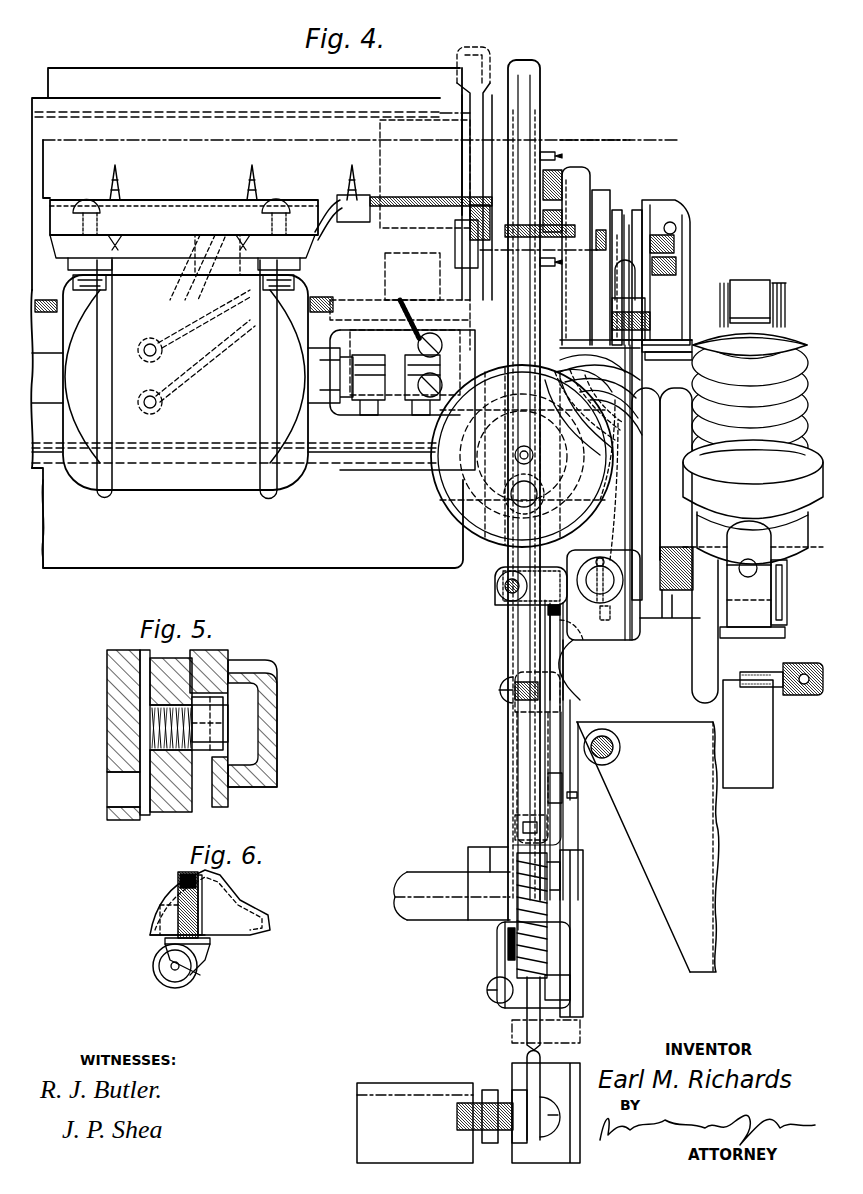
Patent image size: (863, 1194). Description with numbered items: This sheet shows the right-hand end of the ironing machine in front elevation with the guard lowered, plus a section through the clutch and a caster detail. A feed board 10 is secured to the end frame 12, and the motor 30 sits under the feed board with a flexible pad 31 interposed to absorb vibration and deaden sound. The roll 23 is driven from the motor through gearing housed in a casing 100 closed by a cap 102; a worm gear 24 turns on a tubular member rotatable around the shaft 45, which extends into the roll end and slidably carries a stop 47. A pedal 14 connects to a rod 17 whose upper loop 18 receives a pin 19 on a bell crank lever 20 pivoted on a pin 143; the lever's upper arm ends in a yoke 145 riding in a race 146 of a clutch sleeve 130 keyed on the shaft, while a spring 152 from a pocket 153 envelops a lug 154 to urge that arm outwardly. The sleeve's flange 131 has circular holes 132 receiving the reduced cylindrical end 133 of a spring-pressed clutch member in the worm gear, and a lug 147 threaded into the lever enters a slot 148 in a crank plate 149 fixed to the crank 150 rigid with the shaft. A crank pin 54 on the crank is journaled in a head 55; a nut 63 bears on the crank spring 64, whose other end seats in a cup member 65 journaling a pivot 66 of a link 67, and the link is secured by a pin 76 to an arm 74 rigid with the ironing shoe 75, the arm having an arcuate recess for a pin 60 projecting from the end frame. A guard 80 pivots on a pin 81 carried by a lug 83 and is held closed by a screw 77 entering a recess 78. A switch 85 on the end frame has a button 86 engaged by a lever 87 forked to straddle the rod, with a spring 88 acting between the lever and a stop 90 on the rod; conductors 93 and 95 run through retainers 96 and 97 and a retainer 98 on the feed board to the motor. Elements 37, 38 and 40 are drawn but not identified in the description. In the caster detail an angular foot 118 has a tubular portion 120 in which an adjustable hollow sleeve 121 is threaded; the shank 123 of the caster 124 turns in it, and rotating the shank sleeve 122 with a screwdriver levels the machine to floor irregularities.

In FIG. 4, the feed board 10 is at (107, 150).
In FIG. 4, the ironing shoe 75 is at (222, 80).
In FIG. 4, the roll 23 is at (346, 462).
In FIG. 4, the flexible pad 31 is at (163, 235).
In FIG. 4, the motor 30 is at (192, 379).
In FIG. 4, the electrical conductor 95 is at (168, 346).
In FIG. 4, the shaft 45 is at (342, 268).
In FIG. 4, the retainer 98 is at (360, 195).
In FIG. 4, the retainer 97 is at (470, 238).
In FIG. 4, the cap 102 is at (463, 278).
In FIG. 4, the recess 78 is at (470, 62).
In FIG. 4, the worm gear 24 is at (525, 72).
In FIG. 4, the pin 38 is at (540, 175).
In FIG. 4, the bushing 37 is at (565, 195).
In FIG. 4, the slide bar 40 is at (568, 212).
In FIG. 4, the stop 47 is at (602, 204).
In FIG. 4, the flange 131 is at (618, 232).
In FIG. 5, the flange 131 is at (120, 655).
In FIG. 4, the race 146 is at (627, 242).
In FIG. 4, the clutch sleeve 130 is at (637, 262).
In FIG. 4, the crank 150 is at (668, 208).
In FIG. 4, the crank plate 149 is at (645, 243).
In FIG. 5, the crank plate 149 is at (222, 654).
In FIG. 4, the yoke 145 is at (627, 290).
In FIG. 4, the bell crank lever 20 is at (588, 610).
In FIG. 5, the bell crank lever 20 is at (162, 812).
In FIG. 4, the lug 147 is at (637, 350).
In FIG. 5, the lug 147 is at (215, 714).
In FIG. 4, the reduced cylindrical end 133 is at (632, 372).
In FIG. 4, the pocket 153 is at (636, 390).
In FIG. 4, the spring 152 is at (638, 410).
In FIG. 4, the lug 154 is at (640, 430).
In FIG. 4, the casing 100 is at (458, 512).
In FIG. 4, the loop 18 is at (505, 570).
In FIG. 4, the pin 19 is at (510, 605).
In FIG. 4, the pin 143 is at (605, 592).
In FIG. 4, the retainer 96 is at (562, 645).
In FIG. 4, the electrical conductor 93 is at (568, 660).
In FIG. 4, the arm 74 is at (633, 498).
In FIG. 4, the cup member 65 is at (684, 480).
In FIG. 4, the crank spring 64 is at (704, 443).
In FIG. 4, the nut 63 is at (785, 338).
In FIG. 4, the head 55 is at (746, 292).
In FIG. 4, the crank pin 54 is at (790, 300).
In FIG. 4, the pin 60 is at (780, 576).
In FIG. 4, the pivot 66 is at (785, 603).
In FIG. 4, the pin 76 is at (754, 580).
In FIG. 4, the link 67 is at (712, 670).
In FIG. 4, the screw 77 is at (786, 696).
In FIG. 4, the guard 80 is at (745, 776).
In FIG. 4, the lug 83 is at (608, 762).
In FIG. 4, the pin 81 is at (588, 768).
In FIG. 4, the stop 90 is at (525, 822).
In FIG. 4, the switch 85 is at (478, 912).
In FIG. 4, the spring 88 is at (547, 933).
In FIG. 4, the button 86 is at (507, 948).
In FIG. 4, the end frame 12 is at (578, 958).
In FIG. 4, the lever 87 is at (515, 1002).
In FIG. 4, the rod 17 is at (537, 1035).
In FIG. 4, the pedal 14 is at (398, 1094).
In FIG. 5, the circular holes 132 is at (115, 796).
In FIG. 5, the slot 148 is at (225, 742).
In FIG. 6, the adjustable hollow sleeve 121 is at (178, 883).
In FIG. 6, the shank sleeve 122 is at (180, 872).
In FIG. 6, the shank 123 is at (162, 912).
In FIG. 6, the tubular portion 120 is at (200, 920).
In FIG. 6, the angular foot 118 is at (158, 940).
In FIG. 6, the caster 124 is at (198, 968).